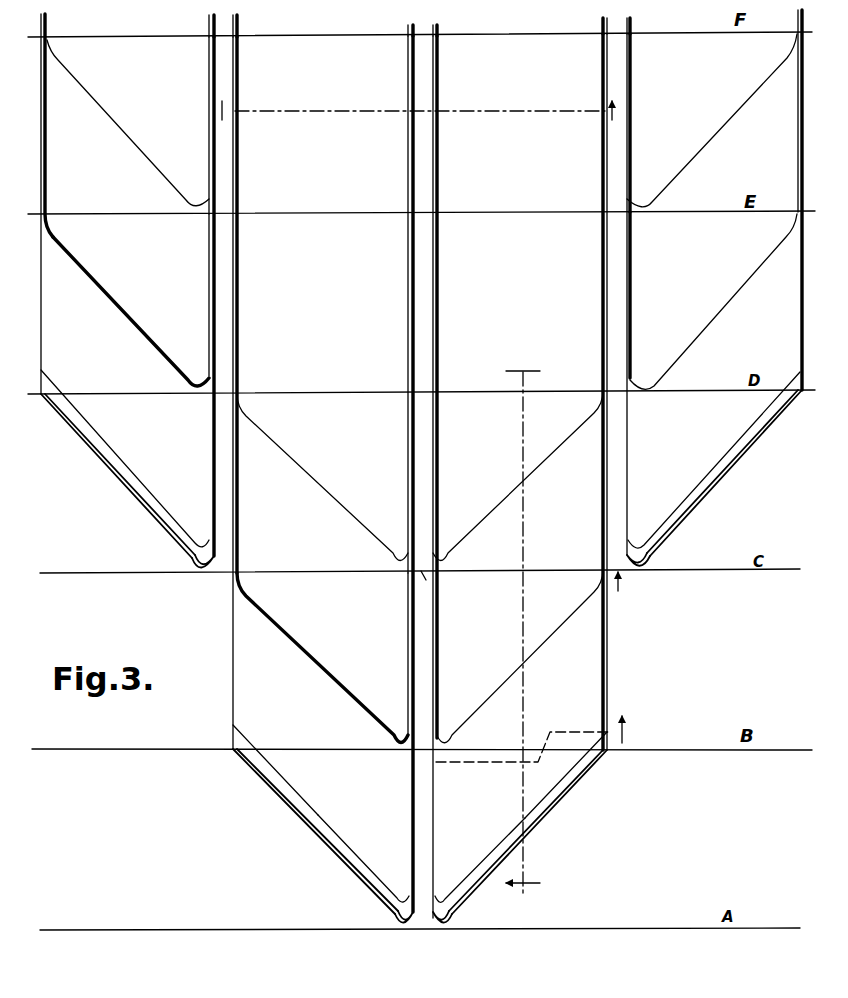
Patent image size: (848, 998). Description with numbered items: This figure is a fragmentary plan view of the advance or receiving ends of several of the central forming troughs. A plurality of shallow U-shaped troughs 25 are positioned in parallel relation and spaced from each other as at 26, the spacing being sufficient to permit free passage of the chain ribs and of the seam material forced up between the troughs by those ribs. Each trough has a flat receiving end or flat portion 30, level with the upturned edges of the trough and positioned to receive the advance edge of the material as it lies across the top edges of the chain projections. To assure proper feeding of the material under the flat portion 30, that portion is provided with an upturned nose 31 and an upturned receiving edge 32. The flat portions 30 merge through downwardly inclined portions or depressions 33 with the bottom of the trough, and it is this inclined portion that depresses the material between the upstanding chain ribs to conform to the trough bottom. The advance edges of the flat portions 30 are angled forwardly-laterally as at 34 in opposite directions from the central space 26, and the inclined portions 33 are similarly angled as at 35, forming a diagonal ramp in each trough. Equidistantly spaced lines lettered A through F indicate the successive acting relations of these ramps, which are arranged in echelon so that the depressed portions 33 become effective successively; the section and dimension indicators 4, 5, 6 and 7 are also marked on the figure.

The shallow U-shaped trough 25 is at (185, 40).
The space between troughs 26 is at (222, 300).
The flat portion 30 is at (150, 476).
The upturned nose 31 is at (200, 576).
The upturned receiving edge 32 is at (161, 515).
The downwardly inclined portion 33 is at (197, 267).
The angled advance edge of flat portion 34 is at (266, 788).
The angled inclined portion forming diagonal ramp 35 is at (153, 171).
The section line 4- 4 is at (531, 364).
The dimension 5 is at (415, 123).
The dimension 6 is at (633, 730).
The dimension 7 is at (526, 584).